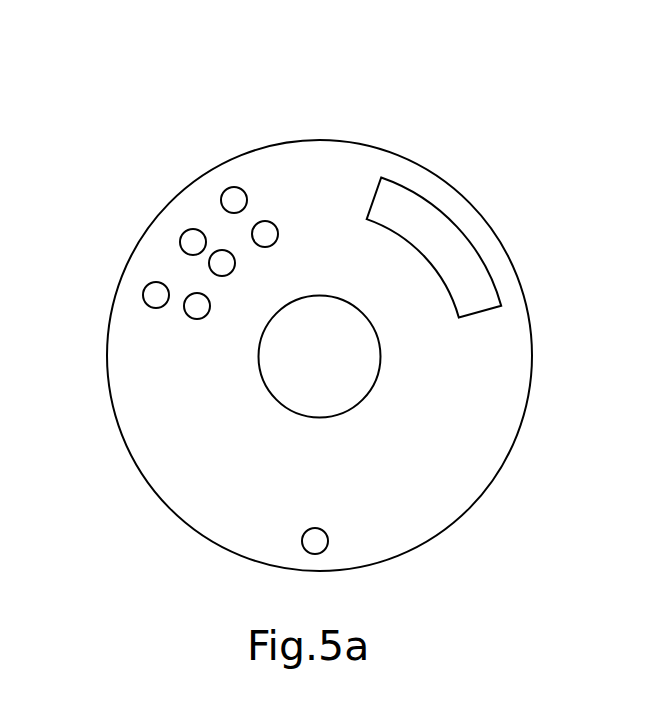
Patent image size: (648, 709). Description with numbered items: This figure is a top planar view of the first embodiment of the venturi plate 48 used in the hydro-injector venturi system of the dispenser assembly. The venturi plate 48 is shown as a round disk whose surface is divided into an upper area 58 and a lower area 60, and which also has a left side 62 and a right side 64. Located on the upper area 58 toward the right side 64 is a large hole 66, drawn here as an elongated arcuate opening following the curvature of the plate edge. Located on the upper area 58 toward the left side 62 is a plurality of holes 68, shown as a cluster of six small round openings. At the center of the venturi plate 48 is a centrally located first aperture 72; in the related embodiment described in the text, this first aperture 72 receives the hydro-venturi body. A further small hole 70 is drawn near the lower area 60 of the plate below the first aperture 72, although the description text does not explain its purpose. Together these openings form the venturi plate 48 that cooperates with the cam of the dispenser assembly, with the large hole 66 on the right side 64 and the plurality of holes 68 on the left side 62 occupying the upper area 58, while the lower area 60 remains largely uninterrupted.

The venturi plate 48 is at (423, 180).
The upper area 58 is at (332, 140).
The lower area 60 is at (190, 491).
The left side 62 is at (100, 378).
The right side 64 is at (535, 372).
The large hole 66 is at (447, 253).
The plurality of holes 68 is at (234, 198).
The hole 70 is at (327, 542).
The first aperture 72 is at (320, 356).